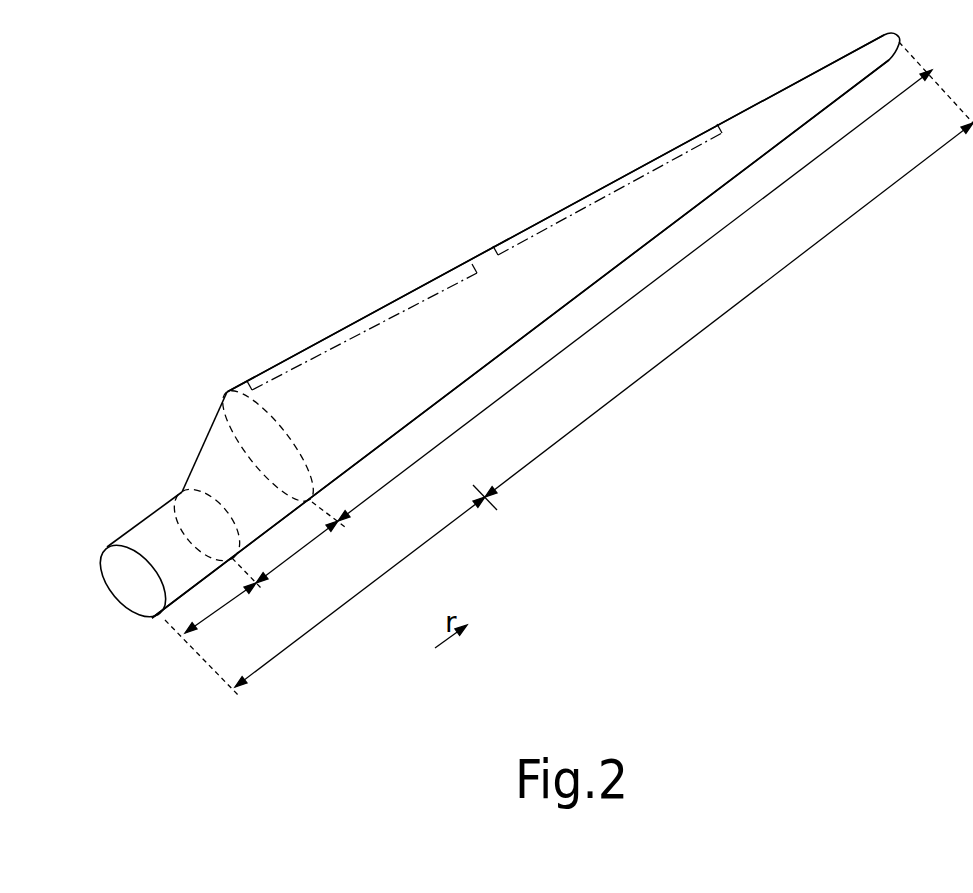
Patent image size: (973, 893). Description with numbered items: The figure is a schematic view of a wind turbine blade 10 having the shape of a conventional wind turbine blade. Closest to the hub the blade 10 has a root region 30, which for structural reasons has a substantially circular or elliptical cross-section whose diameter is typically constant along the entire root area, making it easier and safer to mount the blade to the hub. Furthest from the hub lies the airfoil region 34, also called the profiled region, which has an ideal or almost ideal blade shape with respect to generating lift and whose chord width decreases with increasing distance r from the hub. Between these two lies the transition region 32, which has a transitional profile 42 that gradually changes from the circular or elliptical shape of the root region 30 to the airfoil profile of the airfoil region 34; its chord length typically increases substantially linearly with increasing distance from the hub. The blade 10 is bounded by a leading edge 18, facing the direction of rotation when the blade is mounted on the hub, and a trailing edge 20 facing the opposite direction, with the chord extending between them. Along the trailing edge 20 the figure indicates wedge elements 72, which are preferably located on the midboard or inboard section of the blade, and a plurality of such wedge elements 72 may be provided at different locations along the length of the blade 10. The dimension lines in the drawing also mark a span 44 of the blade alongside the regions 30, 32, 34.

The wind turbine blade 10 is at (356, 208).
The leading edge 18 is at (652, 238).
The trailing edge 20 is at (667, 150).
The root region 30 is at (220, 608).
The transition region 32 is at (293, 558).
The airfoil region 34 is at (570, 344).
The transitional profile 42 is at (418, 549).
The outboard region 44 is at (568, 435).
The wedge element 72 is at (535, 232).